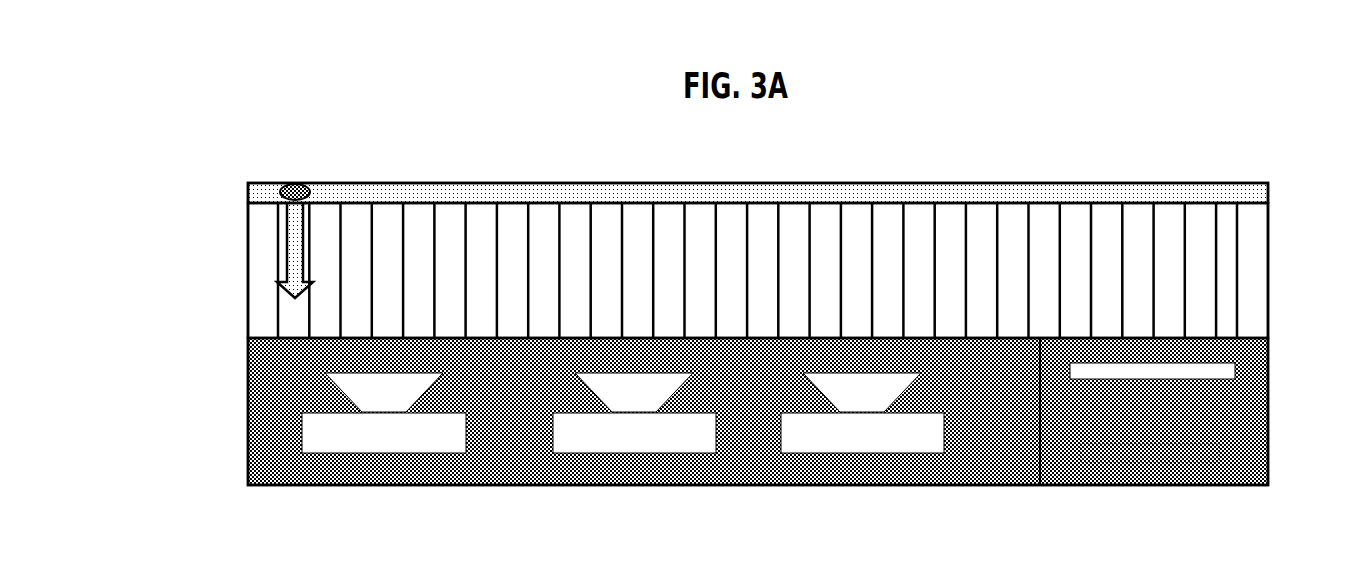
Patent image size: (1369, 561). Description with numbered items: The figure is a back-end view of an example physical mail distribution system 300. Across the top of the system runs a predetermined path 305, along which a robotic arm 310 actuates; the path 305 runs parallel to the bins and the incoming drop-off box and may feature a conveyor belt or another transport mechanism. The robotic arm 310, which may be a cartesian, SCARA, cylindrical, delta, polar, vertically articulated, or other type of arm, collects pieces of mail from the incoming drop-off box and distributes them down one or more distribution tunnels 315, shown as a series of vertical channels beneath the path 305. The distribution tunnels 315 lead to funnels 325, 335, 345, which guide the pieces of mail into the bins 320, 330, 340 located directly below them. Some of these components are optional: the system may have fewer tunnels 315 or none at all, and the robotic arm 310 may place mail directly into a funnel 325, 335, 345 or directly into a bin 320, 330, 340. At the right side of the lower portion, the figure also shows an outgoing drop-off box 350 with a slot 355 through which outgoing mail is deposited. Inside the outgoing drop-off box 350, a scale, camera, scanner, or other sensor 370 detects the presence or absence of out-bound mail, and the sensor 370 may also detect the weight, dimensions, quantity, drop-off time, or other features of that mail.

The physical mail distribution system 300 is at (193, 67).
The predetermined path 305 is at (780, 188).
The robotic arm 310 is at (292, 175).
The distribution tunnels 315 is at (240, 298).
The bin 320 is at (384, 433).
The funnel 325 is at (384, 392).
The bin 330 is at (634, 433).
The funnel 335 is at (634, 392).
The bin 340 is at (862, 433).
The funnel 345 is at (862, 392).
The outgoing drop-off box 350 is at (1270, 413).
The slot 355 is at (1228, 371).
The sensor 370 is at (1222, 451).